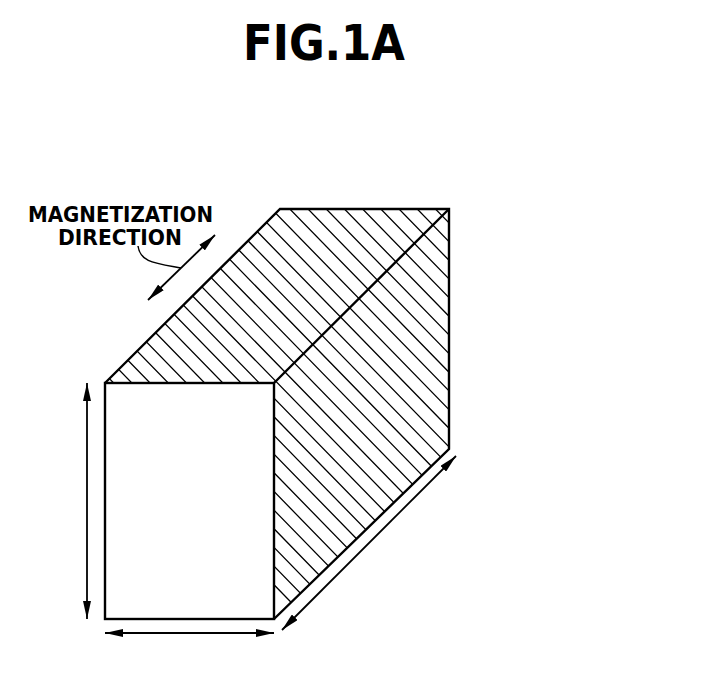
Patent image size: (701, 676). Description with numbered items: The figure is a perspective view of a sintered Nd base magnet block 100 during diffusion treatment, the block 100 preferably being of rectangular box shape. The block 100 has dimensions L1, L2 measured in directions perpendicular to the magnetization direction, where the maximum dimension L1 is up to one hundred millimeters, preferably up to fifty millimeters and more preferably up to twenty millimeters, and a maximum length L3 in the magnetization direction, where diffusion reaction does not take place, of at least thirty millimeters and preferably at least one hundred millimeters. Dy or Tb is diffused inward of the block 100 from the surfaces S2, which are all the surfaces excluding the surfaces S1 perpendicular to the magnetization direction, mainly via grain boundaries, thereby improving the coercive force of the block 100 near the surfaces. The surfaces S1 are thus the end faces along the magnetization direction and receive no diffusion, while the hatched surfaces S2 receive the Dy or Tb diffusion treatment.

The sintered Nd base magnet block 100 is at (350, 384).
The surfaces perpendicular to the magnetization direction S1 is at (177, 487).
The surfaces S2 is at (532, 303).
The maximum dimension L1 is at (73, 501).
The dimension L2 is at (189, 649).
The maximum length in the magnetization direction L3 is at (369, 543).